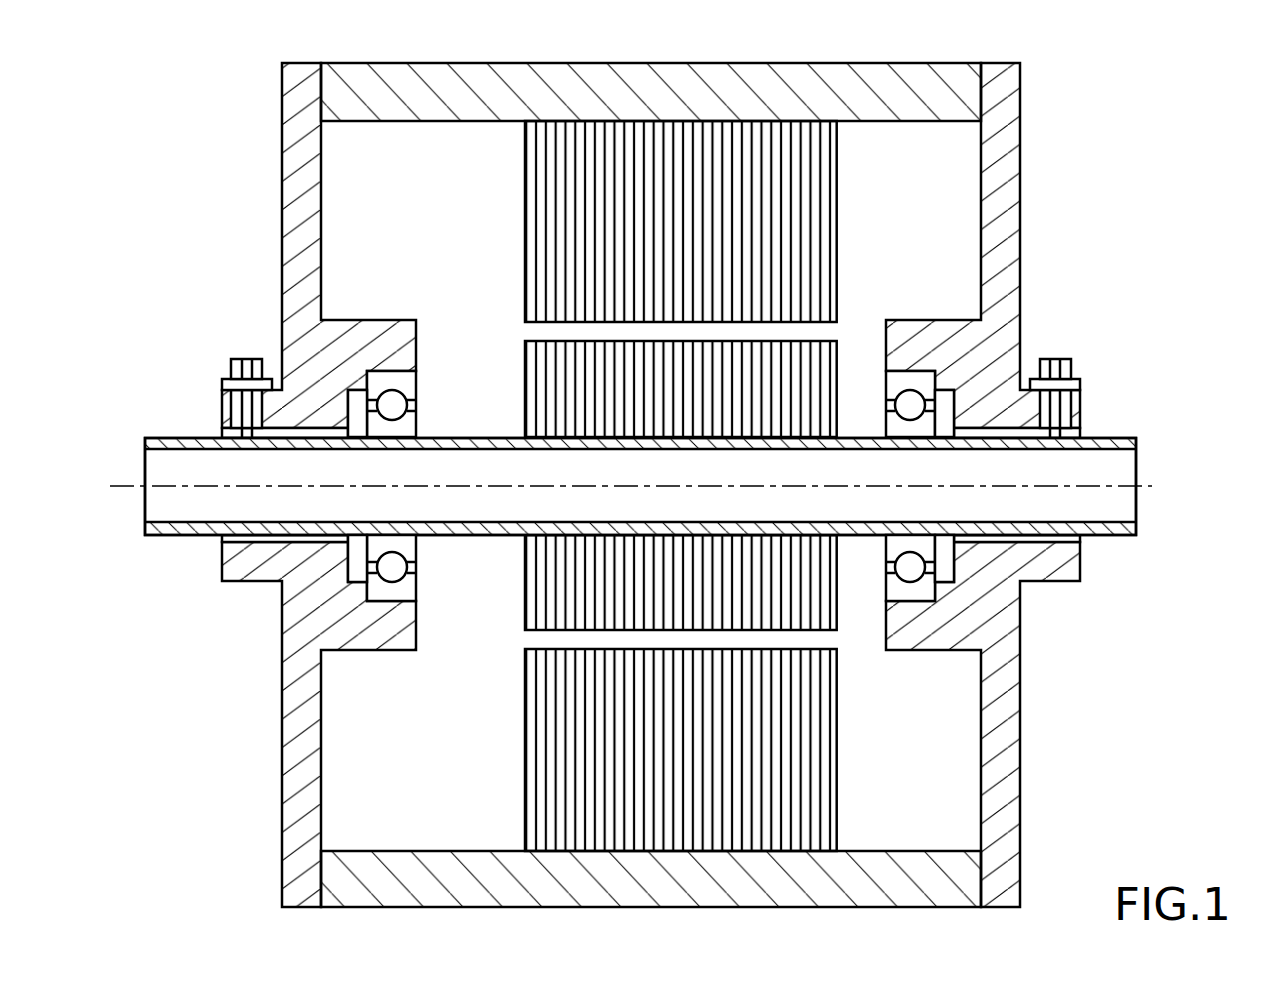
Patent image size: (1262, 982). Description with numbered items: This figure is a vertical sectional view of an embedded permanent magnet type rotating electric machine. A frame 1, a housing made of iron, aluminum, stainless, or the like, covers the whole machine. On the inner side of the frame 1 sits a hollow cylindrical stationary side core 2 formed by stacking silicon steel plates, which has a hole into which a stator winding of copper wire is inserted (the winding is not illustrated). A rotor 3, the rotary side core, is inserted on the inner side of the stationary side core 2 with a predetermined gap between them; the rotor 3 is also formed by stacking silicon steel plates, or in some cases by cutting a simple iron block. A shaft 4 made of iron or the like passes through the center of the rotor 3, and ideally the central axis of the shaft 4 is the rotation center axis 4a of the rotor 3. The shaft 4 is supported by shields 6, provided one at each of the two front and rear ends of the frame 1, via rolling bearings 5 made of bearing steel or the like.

The frame 1 is at (860, 63).
The stationary side core 2 is at (837, 178).
The rotor 3 is at (847, 349).
The shaft 4 is at (492, 437).
The rotation center axis 4a is at (188, 487).
The rolling bearings 5 is at (416, 378).
The shields 6 is at (283, 197).